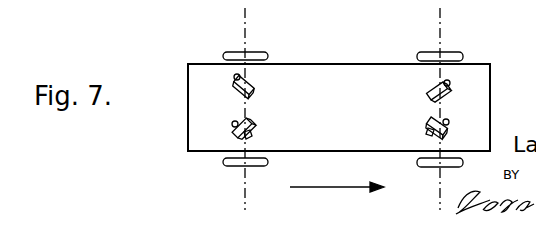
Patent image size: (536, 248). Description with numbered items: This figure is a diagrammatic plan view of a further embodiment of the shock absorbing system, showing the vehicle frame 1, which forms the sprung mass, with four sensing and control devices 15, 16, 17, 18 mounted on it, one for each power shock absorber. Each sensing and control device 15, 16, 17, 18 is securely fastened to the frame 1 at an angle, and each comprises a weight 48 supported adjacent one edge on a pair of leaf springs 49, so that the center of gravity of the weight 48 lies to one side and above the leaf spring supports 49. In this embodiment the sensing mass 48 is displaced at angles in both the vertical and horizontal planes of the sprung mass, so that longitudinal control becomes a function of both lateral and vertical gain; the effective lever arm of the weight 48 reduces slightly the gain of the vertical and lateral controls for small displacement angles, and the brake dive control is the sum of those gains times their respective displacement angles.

The frame 1 is at (364, 63).
The sensing and control device 15 is at (272, 90).
The sensing and control device 16 is at (274, 125).
The sensing and control device 17 is at (426, 120).
The sensing and control device 18 is at (427, 86).
The weight 48 is at (252, 133).
The leaf springs 49 is at (234, 78).